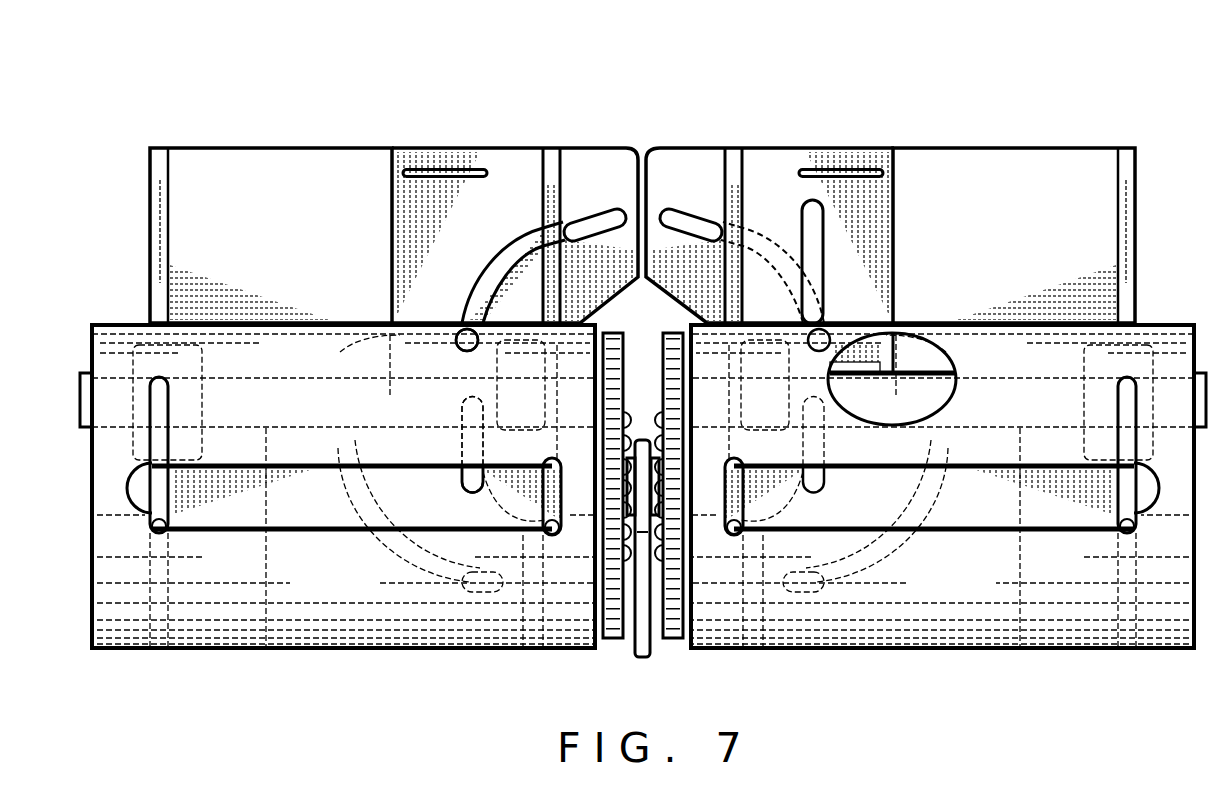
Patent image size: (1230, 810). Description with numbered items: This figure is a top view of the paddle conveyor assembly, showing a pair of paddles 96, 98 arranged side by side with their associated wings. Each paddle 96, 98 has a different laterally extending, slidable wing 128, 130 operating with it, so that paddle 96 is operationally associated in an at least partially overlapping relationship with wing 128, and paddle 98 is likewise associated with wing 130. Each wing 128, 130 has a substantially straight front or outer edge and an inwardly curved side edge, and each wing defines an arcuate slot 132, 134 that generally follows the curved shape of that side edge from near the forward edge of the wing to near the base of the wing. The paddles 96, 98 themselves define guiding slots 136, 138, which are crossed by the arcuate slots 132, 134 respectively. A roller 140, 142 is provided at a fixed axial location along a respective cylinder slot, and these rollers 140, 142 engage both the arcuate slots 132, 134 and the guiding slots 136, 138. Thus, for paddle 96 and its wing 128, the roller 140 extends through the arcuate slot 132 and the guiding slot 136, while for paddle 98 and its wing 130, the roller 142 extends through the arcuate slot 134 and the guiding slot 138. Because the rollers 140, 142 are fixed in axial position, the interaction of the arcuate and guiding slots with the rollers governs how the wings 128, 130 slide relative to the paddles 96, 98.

The paddle 96 is at (188, 220).
The paddle 98 is at (1067, 198).
The wing 128 is at (440, 176).
The wing 130 is at (690, 180).
The arcuate slot 132 is at (583, 225).
The arcuate slot 134 is at (688, 222).
The guiding slot 136 is at (490, 262).
The guiding slot 138 is at (812, 255).
The roller 140 is at (467, 323).
The roller 142 is at (823, 327).